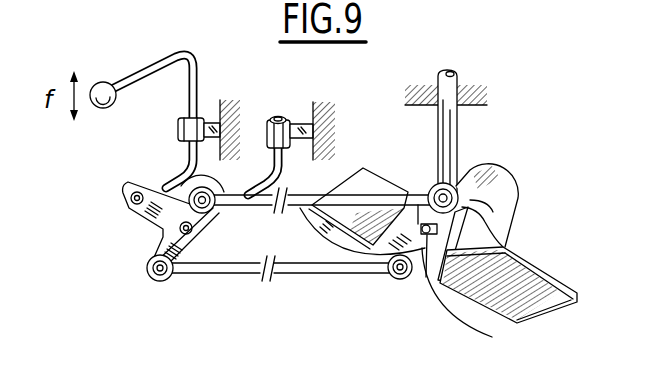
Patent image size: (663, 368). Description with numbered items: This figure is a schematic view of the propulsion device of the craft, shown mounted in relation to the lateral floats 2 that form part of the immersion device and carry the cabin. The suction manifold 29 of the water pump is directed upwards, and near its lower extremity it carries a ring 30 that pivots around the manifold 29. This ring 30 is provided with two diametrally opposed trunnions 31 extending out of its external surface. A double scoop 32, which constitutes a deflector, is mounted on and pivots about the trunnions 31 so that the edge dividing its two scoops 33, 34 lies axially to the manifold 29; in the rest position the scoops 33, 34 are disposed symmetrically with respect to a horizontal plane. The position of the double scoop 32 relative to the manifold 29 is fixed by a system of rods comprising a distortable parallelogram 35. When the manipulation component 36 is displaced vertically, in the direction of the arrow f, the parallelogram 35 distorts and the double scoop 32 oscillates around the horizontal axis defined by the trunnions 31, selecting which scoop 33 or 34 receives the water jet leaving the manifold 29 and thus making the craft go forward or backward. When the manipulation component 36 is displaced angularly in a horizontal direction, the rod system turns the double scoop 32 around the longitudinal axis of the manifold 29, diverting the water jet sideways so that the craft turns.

The lateral float 2 is at (406, 97).
The suction manifold 29 is at (452, 146).
The ring 30 is at (508, 204).
The trunnion 31 is at (500, 180).
The double scoop 32 is at (502, 229).
The scoop 33 is at (514, 296).
The scoop 34 is at (372, 218).
The parallelogram 35 is at (240, 240).
The manipulation component 36 is at (107, 80).